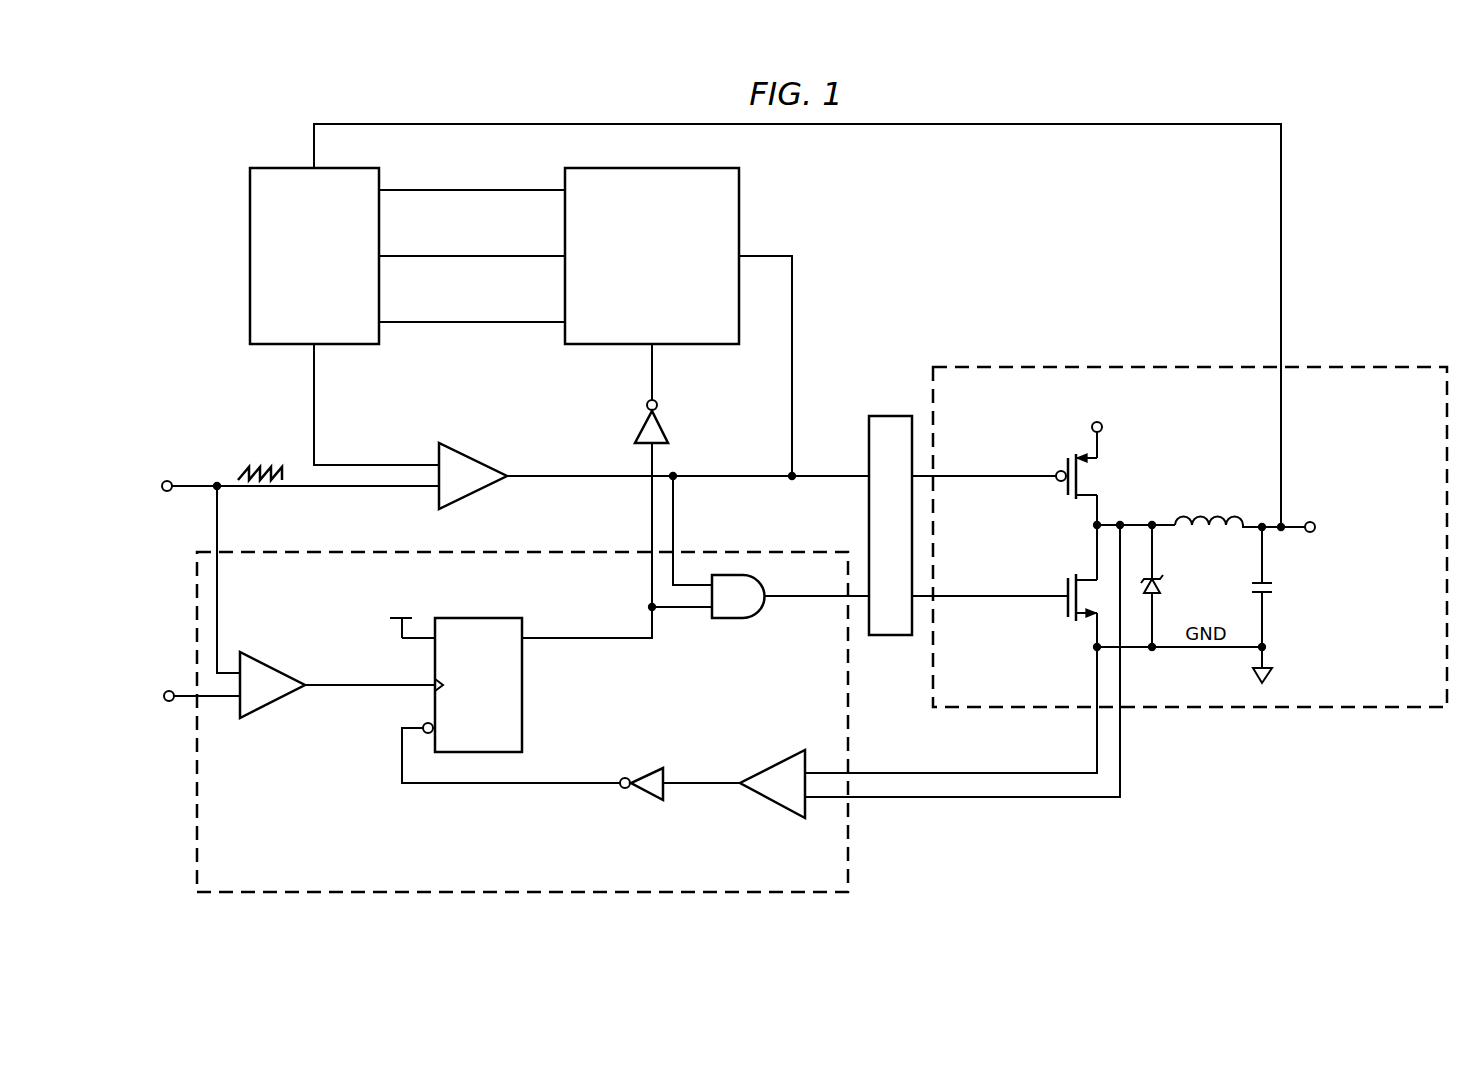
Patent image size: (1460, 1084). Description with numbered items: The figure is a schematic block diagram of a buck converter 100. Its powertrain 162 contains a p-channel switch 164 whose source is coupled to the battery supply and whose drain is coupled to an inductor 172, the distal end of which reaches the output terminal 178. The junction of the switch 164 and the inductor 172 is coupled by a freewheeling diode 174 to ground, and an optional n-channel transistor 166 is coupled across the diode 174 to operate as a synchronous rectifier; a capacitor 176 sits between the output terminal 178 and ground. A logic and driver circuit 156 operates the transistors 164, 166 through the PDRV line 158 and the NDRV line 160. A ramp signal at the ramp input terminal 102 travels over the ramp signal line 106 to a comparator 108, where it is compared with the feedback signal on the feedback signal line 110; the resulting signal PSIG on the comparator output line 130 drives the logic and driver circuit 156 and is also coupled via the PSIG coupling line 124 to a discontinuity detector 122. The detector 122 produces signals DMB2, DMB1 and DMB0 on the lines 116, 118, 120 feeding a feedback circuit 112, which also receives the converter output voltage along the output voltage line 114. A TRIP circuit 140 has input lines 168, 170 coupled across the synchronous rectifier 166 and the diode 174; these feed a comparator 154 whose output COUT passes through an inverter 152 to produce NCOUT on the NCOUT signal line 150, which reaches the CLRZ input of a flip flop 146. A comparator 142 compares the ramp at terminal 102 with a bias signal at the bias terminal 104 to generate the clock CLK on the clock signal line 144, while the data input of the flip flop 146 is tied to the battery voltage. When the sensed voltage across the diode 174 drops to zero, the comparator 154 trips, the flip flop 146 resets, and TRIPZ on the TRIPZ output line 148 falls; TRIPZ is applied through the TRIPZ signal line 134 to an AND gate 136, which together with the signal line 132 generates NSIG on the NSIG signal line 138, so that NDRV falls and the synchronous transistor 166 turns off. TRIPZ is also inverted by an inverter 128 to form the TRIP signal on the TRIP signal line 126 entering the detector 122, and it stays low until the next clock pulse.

The buck converter 100 is at (1051, 85).
The ramp input terminal 102 is at (166, 480).
The bias terminal 104 is at (169, 706).
The ramp signal line 106 is at (346, 489).
The comparator 108 is at (477, 456).
The feedback signal line 110 is at (314, 390).
The feedback circuit 112 is at (297, 298).
The output voltage line 114 is at (1281, 230).
The DMB2 signal line 116 is at (431, 188).
The DMB1 signal line 118 is at (431, 254).
The DMB0 signal line 120 is at (431, 320).
The discontinuity detector 122 is at (635, 298).
The PSIG coupling line 124 is at (766, 254).
The TRIP signal line 126 is at (650, 374).
The inverter 128 is at (668, 426).
The comparator output line 130 is at (765, 473).
The signal line 132 is at (676, 508).
The TRIPZ signal line 134 is at (674, 611).
The AND gate 136 is at (733, 621).
The NSIG signal line 138 is at (793, 599).
The TRIP circuit 140 is at (193, 826).
The comparator 142 is at (274, 704).
The clock signal line 144 is at (348, 682).
The flip flop 146 is at (477, 616).
The TRIPZ output line 148 is at (602, 641).
The NCOUT signal line 150 is at (489, 786).
The inverter 152 is at (644, 797).
The comparator 154 is at (767, 803).
The logic and driver circuit 156 is at (888, 415).
The PDRV line 158 is at (977, 480).
The NDRV line 160 is at (977, 600).
The powertrain 162 is at (1323, 710).
The p-channel switch 164 is at (1064, 489).
The n-channel transistor 166 is at (1064, 610).
The TRIP circuit input line 168 is at (998, 771).
The TRIP circuit input line 170 is at (1027, 799).
The inductor 172 is at (1215, 506).
The freewheeling diode 174 is at (1163, 581).
The capacitor 176 is at (1276, 589).
The output terminal 178 is at (1313, 514).